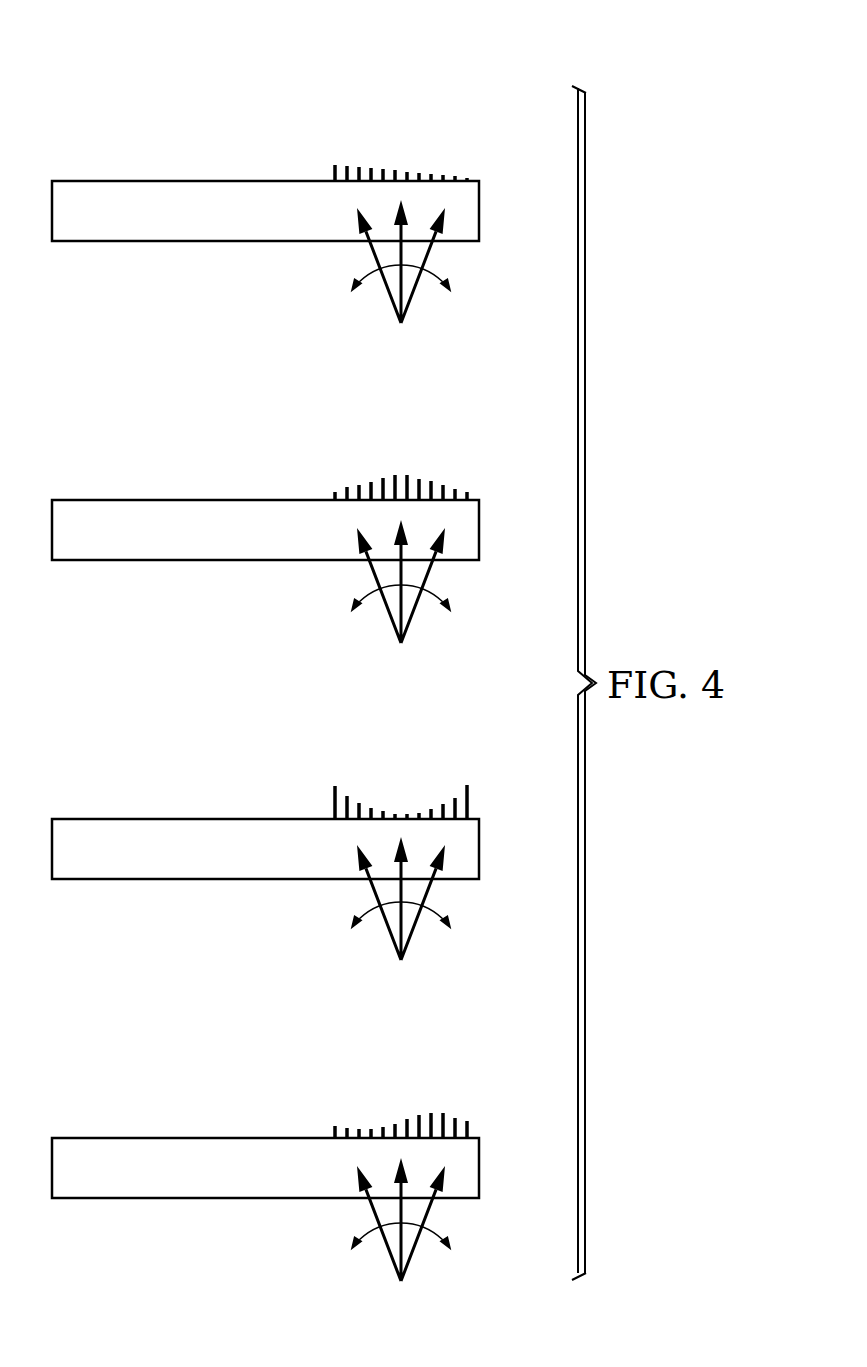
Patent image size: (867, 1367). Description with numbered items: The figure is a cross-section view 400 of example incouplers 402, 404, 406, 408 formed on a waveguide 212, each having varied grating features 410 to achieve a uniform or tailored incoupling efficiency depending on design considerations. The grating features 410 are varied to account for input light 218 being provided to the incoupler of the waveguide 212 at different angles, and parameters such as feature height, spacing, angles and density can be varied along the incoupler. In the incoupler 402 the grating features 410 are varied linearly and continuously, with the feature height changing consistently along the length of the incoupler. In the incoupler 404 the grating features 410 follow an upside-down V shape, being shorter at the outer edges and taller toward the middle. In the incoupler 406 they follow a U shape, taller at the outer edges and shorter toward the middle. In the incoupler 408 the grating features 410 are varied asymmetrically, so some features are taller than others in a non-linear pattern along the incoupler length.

The cross-section view 400 is at (66, 77).
The waveguide 212 is at (203, 180).
The grating features 410 is at (422, 613).
The incoupler 402 is at (453, 168).
The incoupler 404 is at (452, 480).
The incoupler 406 is at (475, 777).
The incoupler 408 is at (453, 1103).
The input light 218 is at (412, 298).